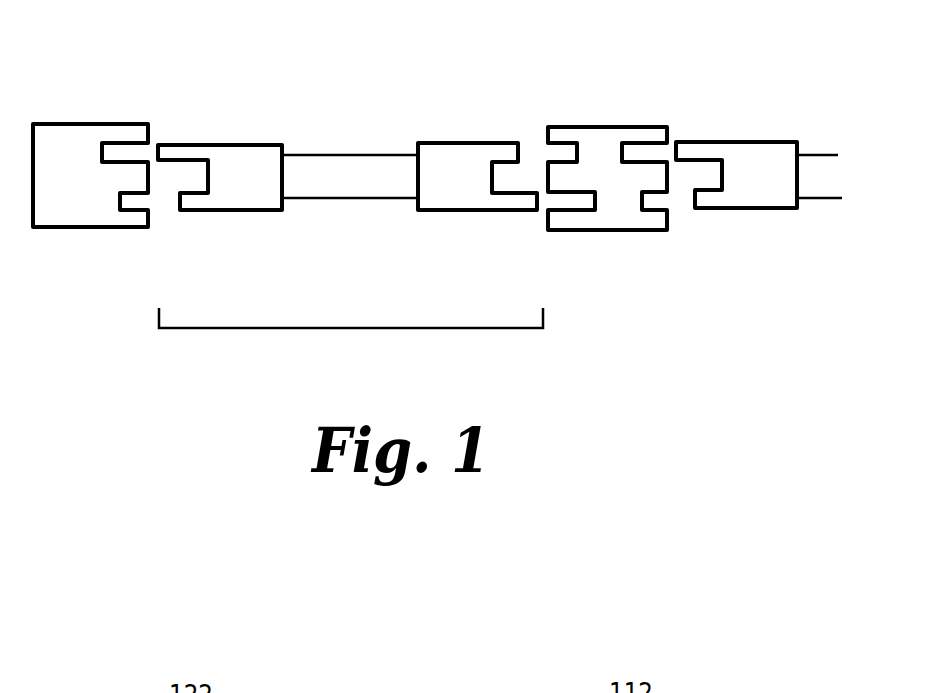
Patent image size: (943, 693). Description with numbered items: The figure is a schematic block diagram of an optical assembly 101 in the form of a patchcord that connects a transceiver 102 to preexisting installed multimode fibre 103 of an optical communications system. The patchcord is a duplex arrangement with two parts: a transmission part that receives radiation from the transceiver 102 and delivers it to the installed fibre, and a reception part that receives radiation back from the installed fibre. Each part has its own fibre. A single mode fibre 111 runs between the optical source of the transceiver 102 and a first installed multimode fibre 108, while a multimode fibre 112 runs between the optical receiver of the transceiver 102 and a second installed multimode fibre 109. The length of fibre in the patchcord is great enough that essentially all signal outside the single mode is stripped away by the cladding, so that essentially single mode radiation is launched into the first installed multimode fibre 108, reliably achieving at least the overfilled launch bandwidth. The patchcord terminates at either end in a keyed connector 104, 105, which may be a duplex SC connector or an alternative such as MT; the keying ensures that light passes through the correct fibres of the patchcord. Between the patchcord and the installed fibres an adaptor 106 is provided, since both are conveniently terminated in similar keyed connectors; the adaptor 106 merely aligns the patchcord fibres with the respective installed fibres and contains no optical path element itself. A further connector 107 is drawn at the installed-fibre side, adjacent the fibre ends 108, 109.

The optical assembly 101 is at (353, 328).
The transceiver 102 is at (90, 124).
The installed multimode fibre 103 is at (830, 118).
The keyed connector 104 is at (184, 120).
The keyed connector 105 is at (452, 118).
The adaptor 106 is at (587, 105).
The third connector 107 is at (732, 118).
The first installed multimode fibre 108 is at (828, 212).
The second installed multimode fibre 109 is at (815, 168).
The single mode fibre 111 is at (330, 218).
The multimode fibre 112 is at (323, 134).